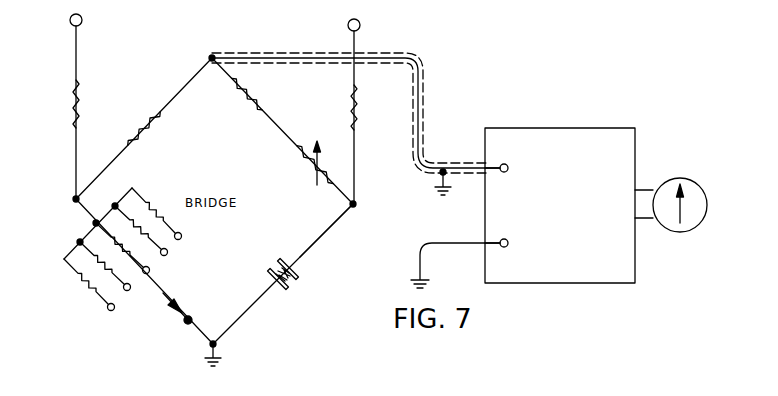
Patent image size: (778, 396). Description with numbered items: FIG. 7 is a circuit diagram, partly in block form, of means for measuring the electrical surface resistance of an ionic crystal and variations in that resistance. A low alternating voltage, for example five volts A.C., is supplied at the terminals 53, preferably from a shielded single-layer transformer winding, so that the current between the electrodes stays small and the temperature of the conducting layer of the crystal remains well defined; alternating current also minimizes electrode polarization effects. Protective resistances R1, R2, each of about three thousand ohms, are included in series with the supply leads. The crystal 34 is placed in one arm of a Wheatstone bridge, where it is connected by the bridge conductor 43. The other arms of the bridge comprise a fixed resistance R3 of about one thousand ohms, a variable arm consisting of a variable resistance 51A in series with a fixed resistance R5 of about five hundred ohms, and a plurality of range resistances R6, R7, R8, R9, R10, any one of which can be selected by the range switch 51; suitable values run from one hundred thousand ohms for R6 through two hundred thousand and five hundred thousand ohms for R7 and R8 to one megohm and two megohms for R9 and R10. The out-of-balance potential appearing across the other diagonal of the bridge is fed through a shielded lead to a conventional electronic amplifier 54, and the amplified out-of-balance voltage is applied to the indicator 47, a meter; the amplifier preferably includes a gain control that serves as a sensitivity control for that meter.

The terminals 53 is at (82, 22).
The protective resistance R1 is at (73, 112).
The protective resistance R2 is at (357, 100).
The fixed resistance R3 is at (156, 121).
The fixed resistance R5 is at (259, 108).
The resistance R6 is at (152, 214).
The resistance R7 is at (137, 231).
The resistance R8 is at (118, 248).
The resistance R9 is at (100, 266).
The resistance R10 is at (78, 285).
The variable resistance 51A is at (316, 176).
The range switch 51 is at (183, 310).
The bridge conductor 43 is at (325, 232).
The crystal 34 is at (292, 287).
The amplifier 54 is at (548, 283).
The indicator 47 is at (678, 232).